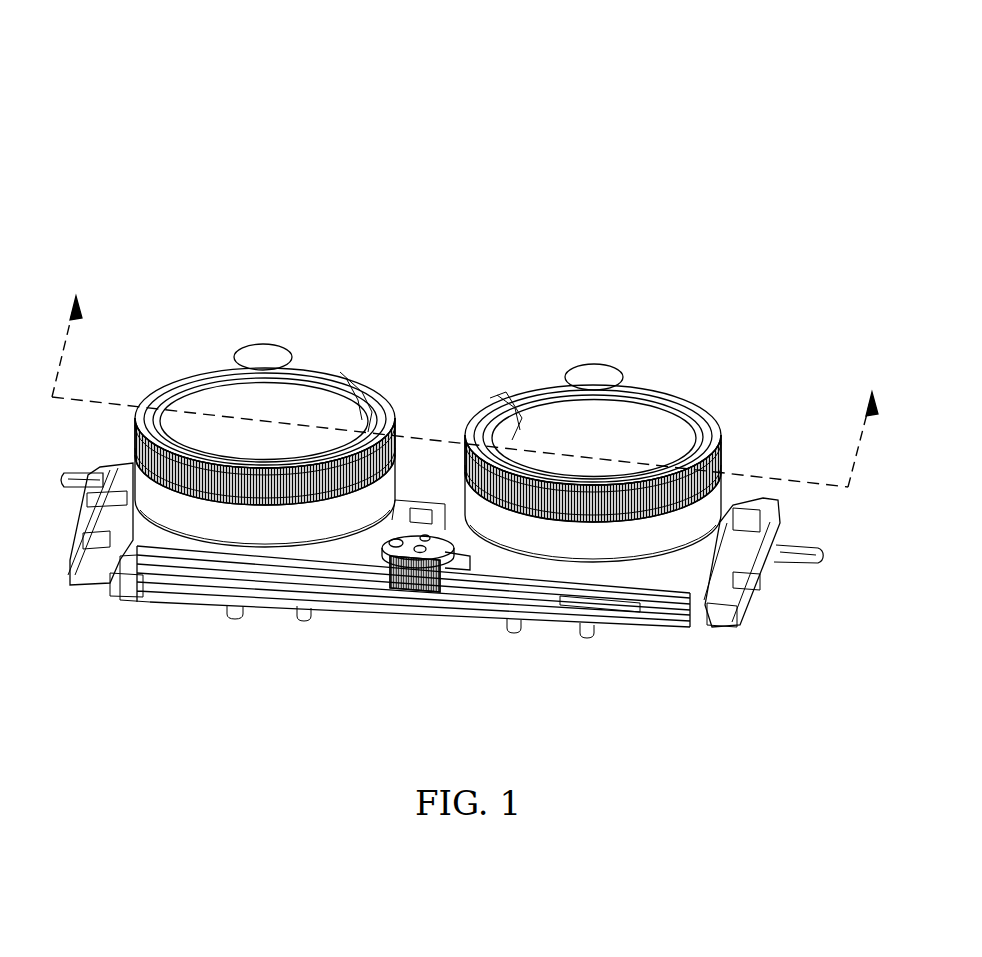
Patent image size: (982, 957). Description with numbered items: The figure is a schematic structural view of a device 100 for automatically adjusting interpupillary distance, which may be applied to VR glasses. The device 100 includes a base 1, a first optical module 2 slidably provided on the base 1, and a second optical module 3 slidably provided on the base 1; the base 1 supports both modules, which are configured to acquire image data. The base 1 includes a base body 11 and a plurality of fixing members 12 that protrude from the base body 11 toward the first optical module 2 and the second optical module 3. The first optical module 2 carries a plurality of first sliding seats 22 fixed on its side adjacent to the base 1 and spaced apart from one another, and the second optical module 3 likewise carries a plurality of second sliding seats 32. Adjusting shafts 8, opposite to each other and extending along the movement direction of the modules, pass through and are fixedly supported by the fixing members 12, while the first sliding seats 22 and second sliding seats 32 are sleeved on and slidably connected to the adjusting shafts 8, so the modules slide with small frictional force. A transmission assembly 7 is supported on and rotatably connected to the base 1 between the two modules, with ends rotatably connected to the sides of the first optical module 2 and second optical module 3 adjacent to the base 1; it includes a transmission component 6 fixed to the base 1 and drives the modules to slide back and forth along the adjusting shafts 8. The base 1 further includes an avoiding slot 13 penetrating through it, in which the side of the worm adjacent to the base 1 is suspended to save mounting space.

The device for automatically adjusting IPD 100 is at (415, 62).
The base 1 is at (327, 674).
The base body 11 is at (313, 606).
The fixing members 12 is at (352, 598).
The avoiding slot 13 is at (405, 600).
The first optical module 2 is at (295, 386).
The first sliding seats 22 is at (192, 580).
The second optical module 3 is at (638, 418).
The second sliding seats 32 is at (632, 606).
The transmission component 6 is at (437, 578).
The transmission assembly 7 is at (470, 556).
The adjusting shafts 8 is at (605, 606).